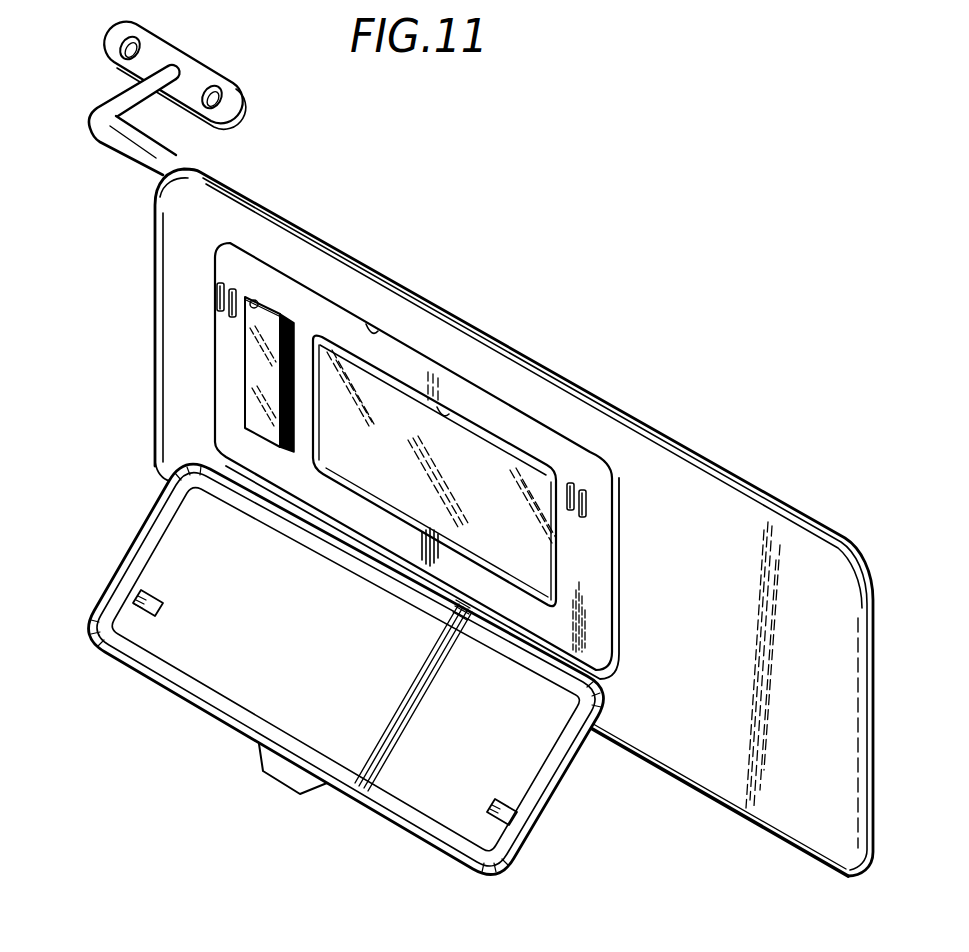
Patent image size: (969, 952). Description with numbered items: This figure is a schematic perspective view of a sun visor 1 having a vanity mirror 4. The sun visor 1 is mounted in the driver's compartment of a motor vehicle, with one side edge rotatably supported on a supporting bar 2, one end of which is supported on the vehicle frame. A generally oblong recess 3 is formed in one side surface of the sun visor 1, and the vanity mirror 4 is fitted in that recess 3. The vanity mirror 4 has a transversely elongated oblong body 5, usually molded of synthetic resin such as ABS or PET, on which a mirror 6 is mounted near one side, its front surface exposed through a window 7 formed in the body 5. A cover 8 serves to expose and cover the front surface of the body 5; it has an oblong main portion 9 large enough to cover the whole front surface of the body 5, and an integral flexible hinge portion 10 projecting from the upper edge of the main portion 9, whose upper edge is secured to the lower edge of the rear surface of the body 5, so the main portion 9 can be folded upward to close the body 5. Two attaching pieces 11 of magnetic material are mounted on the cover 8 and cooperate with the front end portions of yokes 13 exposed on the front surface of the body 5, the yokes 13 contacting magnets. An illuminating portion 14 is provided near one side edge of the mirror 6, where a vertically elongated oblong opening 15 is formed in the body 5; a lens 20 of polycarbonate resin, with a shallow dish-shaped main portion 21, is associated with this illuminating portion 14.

The sun visor 1 is at (510, 348).
The supporting bar 2 is at (92, 128).
The recess 3 is at (373, 328).
The vanity mirror 4 is at (546, 424).
The body 5 is at (598, 557).
The mirror 6 is at (486, 464).
The window 7 is at (445, 412).
The cover 8 is at (153, 681).
The main portion 9 is at (213, 667).
The flexible hinge portion 10 is at (533, 638).
The attaching pieces 11 is at (150, 597).
The yokes 13 is at (227, 302).
The illuminating portion 14 is at (242, 356).
The opening 15 is at (258, 299).
The lens 20 is at (245, 380).
The main portion 21 is at (265, 411).